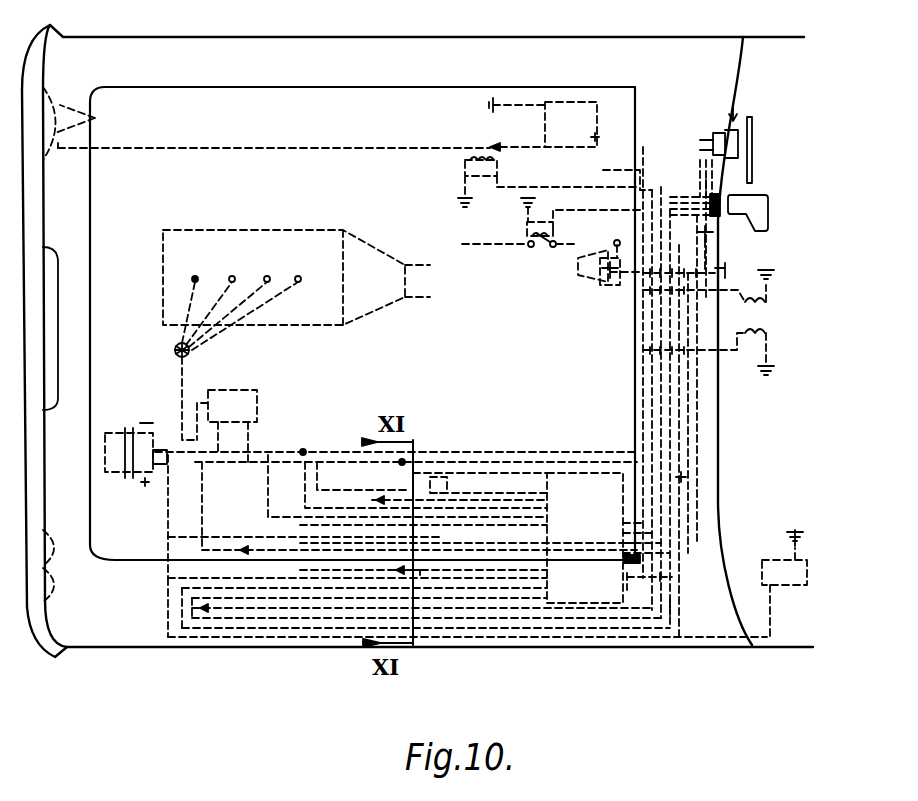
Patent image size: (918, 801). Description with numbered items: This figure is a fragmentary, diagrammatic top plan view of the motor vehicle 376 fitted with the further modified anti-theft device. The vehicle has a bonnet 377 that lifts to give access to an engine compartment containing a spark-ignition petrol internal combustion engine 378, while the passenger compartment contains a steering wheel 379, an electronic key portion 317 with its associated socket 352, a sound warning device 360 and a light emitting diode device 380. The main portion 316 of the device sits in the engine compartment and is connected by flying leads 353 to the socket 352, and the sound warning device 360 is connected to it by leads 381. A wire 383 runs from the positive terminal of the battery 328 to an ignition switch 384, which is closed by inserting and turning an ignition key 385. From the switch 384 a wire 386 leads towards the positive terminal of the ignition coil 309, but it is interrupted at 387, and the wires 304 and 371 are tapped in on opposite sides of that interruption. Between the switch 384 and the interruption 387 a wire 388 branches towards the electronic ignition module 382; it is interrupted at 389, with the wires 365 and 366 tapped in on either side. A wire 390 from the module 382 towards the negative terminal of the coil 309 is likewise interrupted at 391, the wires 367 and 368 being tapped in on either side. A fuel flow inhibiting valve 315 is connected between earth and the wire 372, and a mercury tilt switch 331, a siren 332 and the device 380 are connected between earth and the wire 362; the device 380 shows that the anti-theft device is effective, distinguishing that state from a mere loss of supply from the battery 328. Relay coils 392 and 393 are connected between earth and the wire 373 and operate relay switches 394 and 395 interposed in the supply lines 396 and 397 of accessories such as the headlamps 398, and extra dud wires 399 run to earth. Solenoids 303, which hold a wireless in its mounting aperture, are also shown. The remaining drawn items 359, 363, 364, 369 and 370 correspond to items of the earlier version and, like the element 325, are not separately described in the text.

The solenoid 303 is at (768, 302).
The wire 304 is at (487, 533).
The ignition coil 309 is at (108, 460).
The fuel flow inhibiting valve 315 is at (782, 560).
The main portion 316 is at (669, 575).
The electronic key portion 317 is at (756, 196).
The brush 325 is at (174, 355).
The battery 328 is at (597, 102).
The mercury tilt switch 331 is at (610, 288).
The siren 332 is at (578, 260).
The socket 352 is at (717, 190).
The flying leads 353 is at (680, 480).
The anti-theft device element 359 is at (268, 640).
The sound warning device 360 is at (716, 180).
The wire 362 is at (672, 612).
The anti-theft device element 363 is at (430, 560).
The anti-theft device element 364 is at (433, 580).
The wire 365 is at (535, 600).
The wire 366 is at (500, 620).
The wire 367 is at (470, 600).
The wire 368 is at (445, 625).
The anti-theft device element 369 is at (447, 540).
The anti-theft device element 370 is at (533, 567).
The wire 371 is at (517, 553).
The wire 372 is at (168, 570).
The wire 373 is at (246, 640).
The motor vehicle 376 is at (82, 352).
The bonnet 377 is at (108, 408).
The internal combustion engine 378 is at (215, 230).
The steering wheel 379 is at (752, 142).
The light emitting diode device 380 is at (733, 265).
The leads 381 is at (665, 470).
The electronic ignition module 382 is at (243, 390).
The wire 383 is at (680, 145).
The ignition switch 384 is at (752, 124).
The ignition key 385 is at (735, 112).
The wire 386 is at (328, 458).
The interruption 387 is at (350, 462).
The wire 388 is at (248, 463).
The interruption 389 is at (266, 487).
The wire 390 is at (165, 445).
The interruption 391 is at (167, 487).
The relay coil 392 is at (462, 168).
The relay coil 393 is at (525, 229).
The relay switch 394 is at (478, 147).
The relay switch 395 is at (543, 253).
The supply line 396 is at (257, 147).
The supply line 397 is at (468, 262).
The headlamps 398 is at (95, 118).
The dud wires 399 is at (217, 640).